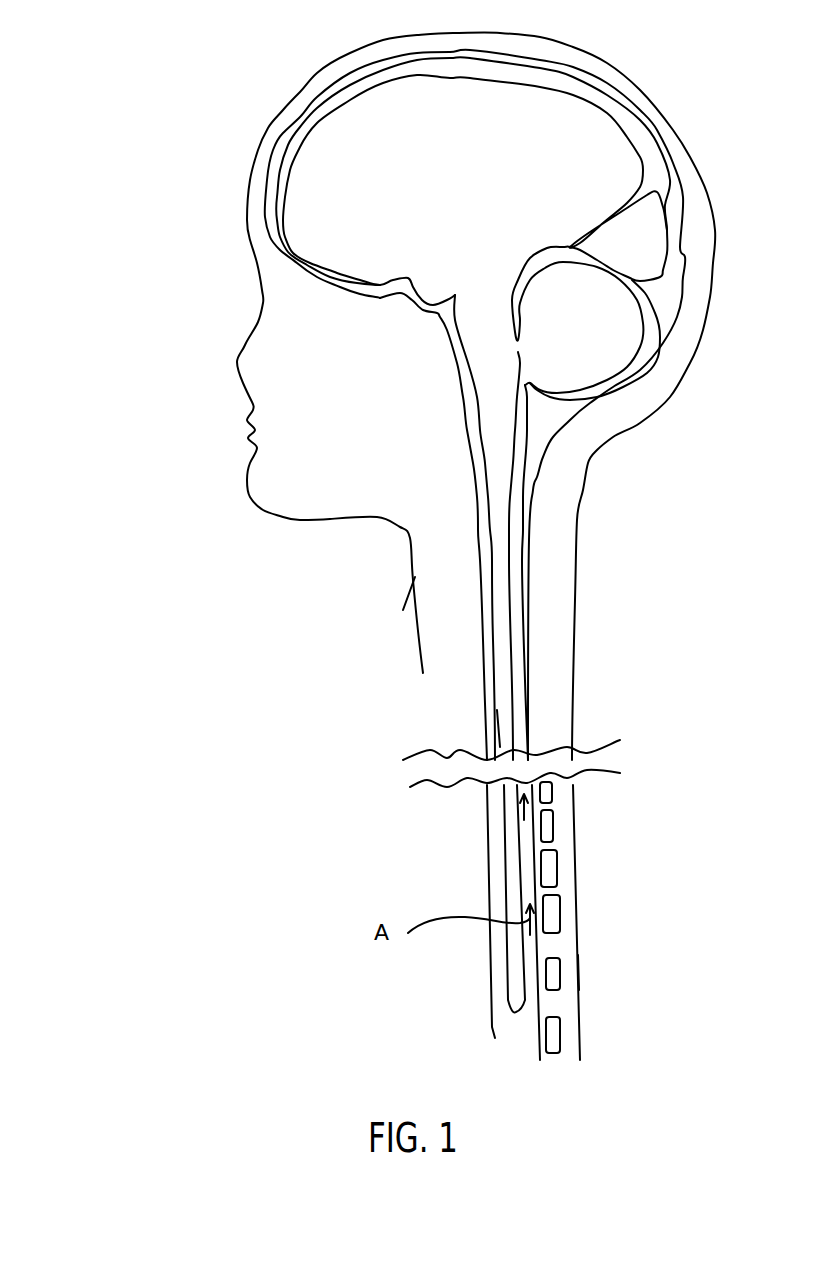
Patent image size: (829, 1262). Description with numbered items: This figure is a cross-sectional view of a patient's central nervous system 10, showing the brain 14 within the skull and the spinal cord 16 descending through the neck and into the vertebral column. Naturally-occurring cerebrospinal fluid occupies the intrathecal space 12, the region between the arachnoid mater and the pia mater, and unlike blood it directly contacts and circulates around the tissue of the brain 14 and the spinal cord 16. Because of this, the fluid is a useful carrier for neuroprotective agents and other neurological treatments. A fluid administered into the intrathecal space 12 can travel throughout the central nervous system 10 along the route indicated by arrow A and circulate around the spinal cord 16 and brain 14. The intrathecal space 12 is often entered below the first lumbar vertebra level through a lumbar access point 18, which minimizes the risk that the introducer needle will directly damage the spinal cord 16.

The central nervous system 10 is at (177, 118).
The intrathecal space 12 is at (520, 613).
The brain 14 is at (532, 122).
The spinal cord 16 is at (505, 660).
The lumbar access point 18 is at (540, 1007).